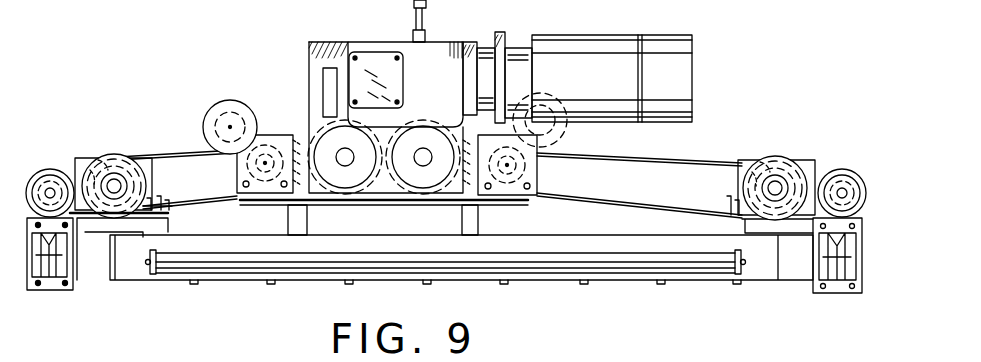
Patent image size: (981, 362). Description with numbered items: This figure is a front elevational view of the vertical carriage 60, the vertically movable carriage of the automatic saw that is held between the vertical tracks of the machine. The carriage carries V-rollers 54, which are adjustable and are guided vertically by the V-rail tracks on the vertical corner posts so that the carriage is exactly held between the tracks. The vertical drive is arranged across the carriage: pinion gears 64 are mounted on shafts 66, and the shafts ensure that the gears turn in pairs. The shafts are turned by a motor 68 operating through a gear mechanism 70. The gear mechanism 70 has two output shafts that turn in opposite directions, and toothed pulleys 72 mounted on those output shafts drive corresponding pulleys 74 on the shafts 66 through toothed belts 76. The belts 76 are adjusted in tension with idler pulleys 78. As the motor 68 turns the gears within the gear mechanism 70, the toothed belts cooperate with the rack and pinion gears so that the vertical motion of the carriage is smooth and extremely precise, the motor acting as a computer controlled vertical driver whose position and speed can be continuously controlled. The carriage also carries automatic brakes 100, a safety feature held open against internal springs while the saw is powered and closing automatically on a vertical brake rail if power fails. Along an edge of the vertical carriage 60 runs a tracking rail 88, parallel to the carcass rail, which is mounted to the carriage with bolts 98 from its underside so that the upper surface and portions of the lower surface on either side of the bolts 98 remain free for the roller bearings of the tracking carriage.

The V-rollers 54 is at (47, 272).
The vertical carriage 60 is at (792, 82).
The pinion gears 64 is at (97, 172).
The shafts 66 is at (116, 184).
The motor 68 is at (682, 70).
The gear mechanism 70 is at (447, 88).
The toothed pulleys 72 is at (377, 190).
The pulleys 74 is at (103, 158).
The toothed belts 76 is at (200, 208).
The idler pulleys 78 is at (217, 102).
The tracking rail 88 is at (460, 273).
The bolts 98 is at (265, 284).
The automatic brakes 100 is at (42, 170).